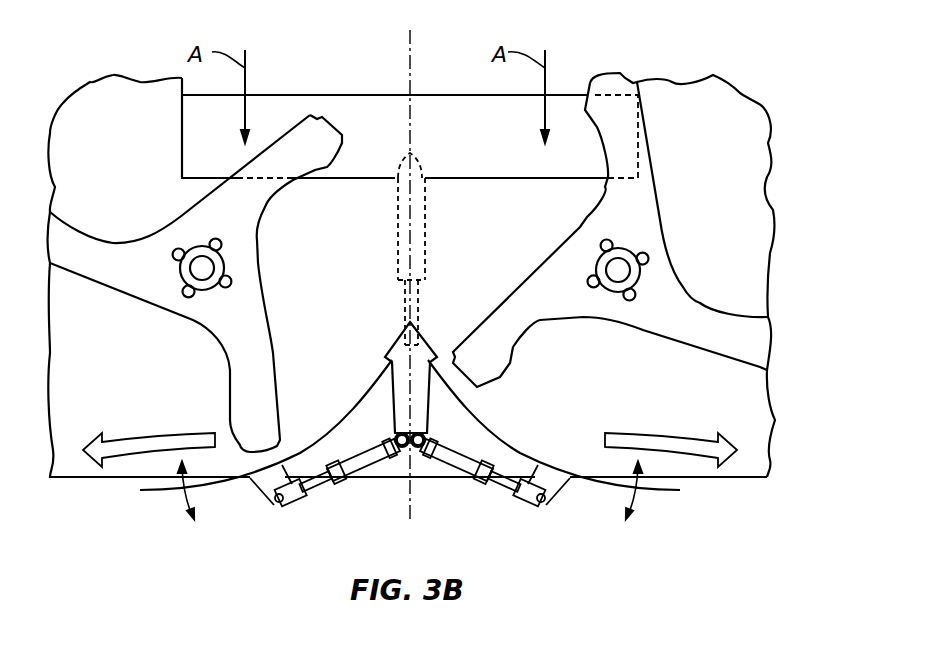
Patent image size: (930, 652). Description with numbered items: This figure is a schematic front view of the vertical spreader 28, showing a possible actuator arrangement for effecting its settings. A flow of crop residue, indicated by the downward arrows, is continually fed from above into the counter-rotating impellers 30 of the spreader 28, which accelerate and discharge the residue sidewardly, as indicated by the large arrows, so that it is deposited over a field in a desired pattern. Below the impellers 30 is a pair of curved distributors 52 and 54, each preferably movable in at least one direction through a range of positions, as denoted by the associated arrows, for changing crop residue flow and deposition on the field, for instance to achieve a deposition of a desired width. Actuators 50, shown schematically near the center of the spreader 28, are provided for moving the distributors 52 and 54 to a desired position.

The spreader 28 is at (716, 56).
The counter-rotating impellers 30 is at (335, 123).
The actuators 50 is at (425, 235).
The curved distributor 52 is at (152, 492).
The curved distributor 54 is at (670, 490).